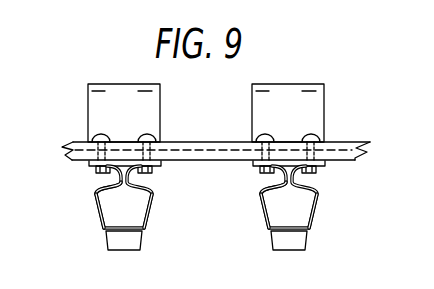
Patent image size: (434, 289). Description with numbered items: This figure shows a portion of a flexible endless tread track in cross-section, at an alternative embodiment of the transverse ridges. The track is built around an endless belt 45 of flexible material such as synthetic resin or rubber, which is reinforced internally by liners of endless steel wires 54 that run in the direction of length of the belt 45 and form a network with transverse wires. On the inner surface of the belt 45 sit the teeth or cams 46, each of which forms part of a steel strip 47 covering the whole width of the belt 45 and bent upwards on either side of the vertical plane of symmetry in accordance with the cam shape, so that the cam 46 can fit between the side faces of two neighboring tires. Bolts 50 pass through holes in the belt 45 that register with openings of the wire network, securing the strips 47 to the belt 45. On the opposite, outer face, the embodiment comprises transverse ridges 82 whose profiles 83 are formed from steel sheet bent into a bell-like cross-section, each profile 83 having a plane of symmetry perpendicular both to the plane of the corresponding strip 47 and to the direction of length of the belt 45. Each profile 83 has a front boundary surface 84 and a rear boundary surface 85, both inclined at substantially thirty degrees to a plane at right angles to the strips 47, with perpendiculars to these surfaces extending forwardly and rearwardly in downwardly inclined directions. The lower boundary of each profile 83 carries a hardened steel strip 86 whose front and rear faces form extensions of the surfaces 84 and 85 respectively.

The endless belt 45 is at (202, 141).
The tooth or cam 46 is at (153, 102).
The steel strip 47 is at (122, 137).
The bolt 50 is at (96, 172).
The endless steel wire 54 is at (372, 142).
The transverse ridge 82 is at (99, 227).
The profile 83 is at (93, 188).
The front boundary surface 84 is at (97, 209).
The rear boundary surface 85 is at (151, 208).
The hardened steel strip 86 is at (123, 242).